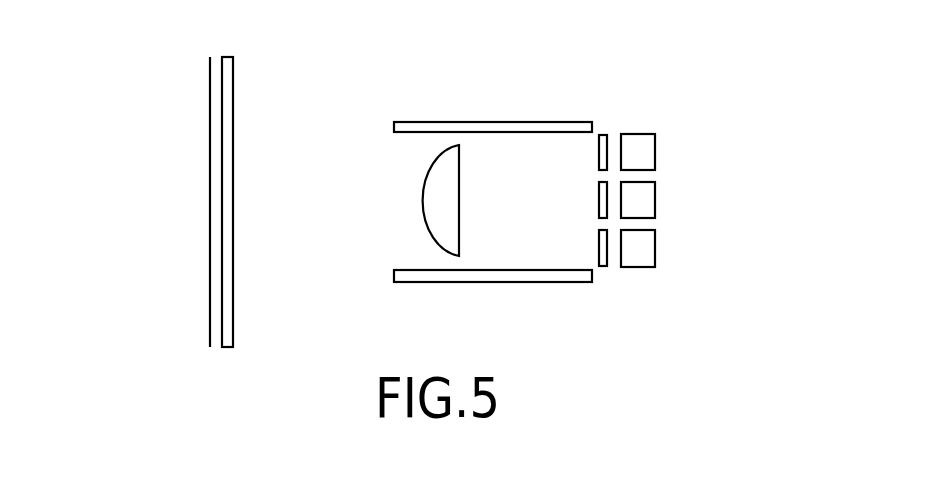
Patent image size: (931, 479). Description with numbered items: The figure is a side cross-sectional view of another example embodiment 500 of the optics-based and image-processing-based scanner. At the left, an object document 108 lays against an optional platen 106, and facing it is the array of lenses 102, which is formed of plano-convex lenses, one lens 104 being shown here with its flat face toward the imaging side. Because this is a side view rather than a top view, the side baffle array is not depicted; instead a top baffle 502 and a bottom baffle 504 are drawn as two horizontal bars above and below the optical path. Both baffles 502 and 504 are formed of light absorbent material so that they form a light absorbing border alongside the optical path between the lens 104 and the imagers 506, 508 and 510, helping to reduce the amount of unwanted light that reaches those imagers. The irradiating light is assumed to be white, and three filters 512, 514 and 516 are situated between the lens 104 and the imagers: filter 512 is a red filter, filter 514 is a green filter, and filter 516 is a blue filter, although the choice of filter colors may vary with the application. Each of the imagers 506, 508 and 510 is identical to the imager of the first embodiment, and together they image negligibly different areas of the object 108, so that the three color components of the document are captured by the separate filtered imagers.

The array of lenses 102 is at (452, 100).
The plano-convex lens 104 is at (428, 208).
The platen 106 is at (234, 120).
The object document 108 is at (209, 83).
The scanner embodiment 500 is at (605, 102).
The top baffle 502 is at (515, 122).
The bottom baffle 504 is at (507, 283).
The imager 506 is at (656, 148).
The imager 508 is at (656, 197).
The imager 510 is at (656, 246).
The red filter 512 is at (599, 151).
The green filter 514 is at (599, 196).
The blue filter 516 is at (599, 240).